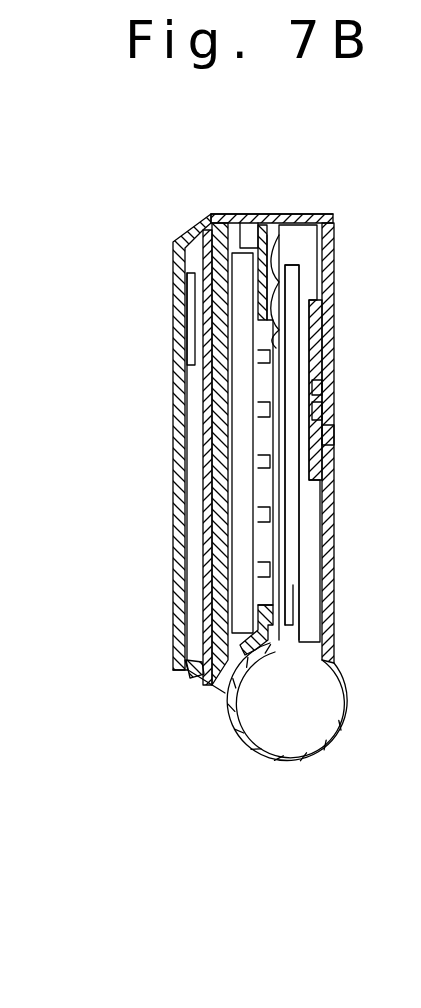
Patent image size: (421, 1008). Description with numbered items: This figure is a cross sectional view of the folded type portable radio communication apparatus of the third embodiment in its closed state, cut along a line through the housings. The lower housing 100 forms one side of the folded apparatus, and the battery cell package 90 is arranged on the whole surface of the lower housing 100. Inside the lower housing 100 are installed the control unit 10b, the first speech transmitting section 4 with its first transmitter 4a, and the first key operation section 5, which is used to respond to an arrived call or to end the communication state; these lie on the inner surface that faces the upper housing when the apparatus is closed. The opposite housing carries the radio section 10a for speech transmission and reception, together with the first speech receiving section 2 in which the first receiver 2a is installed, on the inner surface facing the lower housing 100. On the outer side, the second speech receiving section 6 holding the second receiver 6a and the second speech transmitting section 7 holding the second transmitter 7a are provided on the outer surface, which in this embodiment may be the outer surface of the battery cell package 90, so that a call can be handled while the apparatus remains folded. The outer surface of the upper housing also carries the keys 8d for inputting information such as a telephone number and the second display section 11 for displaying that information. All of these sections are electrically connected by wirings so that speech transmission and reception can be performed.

The lower housing 100 is at (233, 222).
The control unit 10b is at (205, 229).
The radio section 10a is at (305, 587).
The first speech receiving section 2 is at (278, 254).
The first receiver 2a is at (292, 292).
The first speech transmitting section 4 is at (266, 220).
The first transmitter 4a is at (251, 234).
The first key operation section 5 is at (262, 486).
The second speech receiving section 6 is at (182, 318).
The second receiver 6a is at (190, 286).
The second speech transmitting section 7 is at (191, 683).
The second transmitter 7a is at (196, 668).
The keys 8d is at (330, 438).
The second display section 11 is at (323, 352).
The battery cell package 90 is at (181, 560).